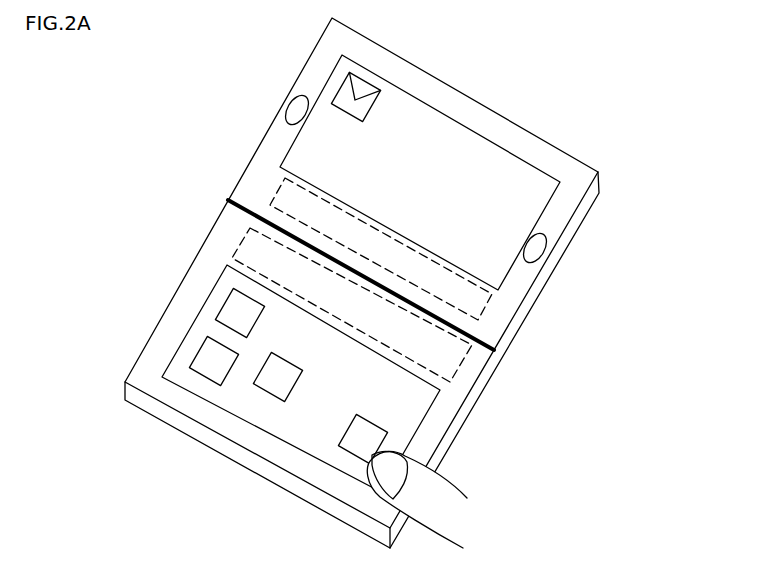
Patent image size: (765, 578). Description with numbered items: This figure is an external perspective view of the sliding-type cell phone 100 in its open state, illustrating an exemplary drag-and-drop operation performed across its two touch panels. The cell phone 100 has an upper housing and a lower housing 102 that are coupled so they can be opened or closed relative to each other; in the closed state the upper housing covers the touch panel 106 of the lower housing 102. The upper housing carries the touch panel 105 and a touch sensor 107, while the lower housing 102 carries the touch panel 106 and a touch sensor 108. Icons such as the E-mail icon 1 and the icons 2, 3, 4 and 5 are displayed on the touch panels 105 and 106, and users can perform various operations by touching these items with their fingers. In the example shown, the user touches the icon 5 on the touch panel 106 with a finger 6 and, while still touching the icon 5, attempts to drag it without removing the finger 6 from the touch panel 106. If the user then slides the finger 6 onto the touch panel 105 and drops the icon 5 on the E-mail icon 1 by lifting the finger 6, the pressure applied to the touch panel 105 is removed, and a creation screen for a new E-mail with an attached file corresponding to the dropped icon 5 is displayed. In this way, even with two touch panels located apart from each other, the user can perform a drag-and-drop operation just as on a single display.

The E-mail icon 1 is at (340, 88).
The icon 2 is at (199, 350).
The icon 3 is at (225, 303).
The icon 4 is at (267, 392).
The icon 5 is at (350, 452).
The finger 6 is at (437, 508).
The cell phone 100 is at (378, 281).
The lower housing 102 is at (490, 108).
The touch panel 105 is at (470, 205).
The touch panel 106 is at (400, 410).
The touch sensor 107 is at (470, 303).
The touch sensor 108 is at (448, 358).